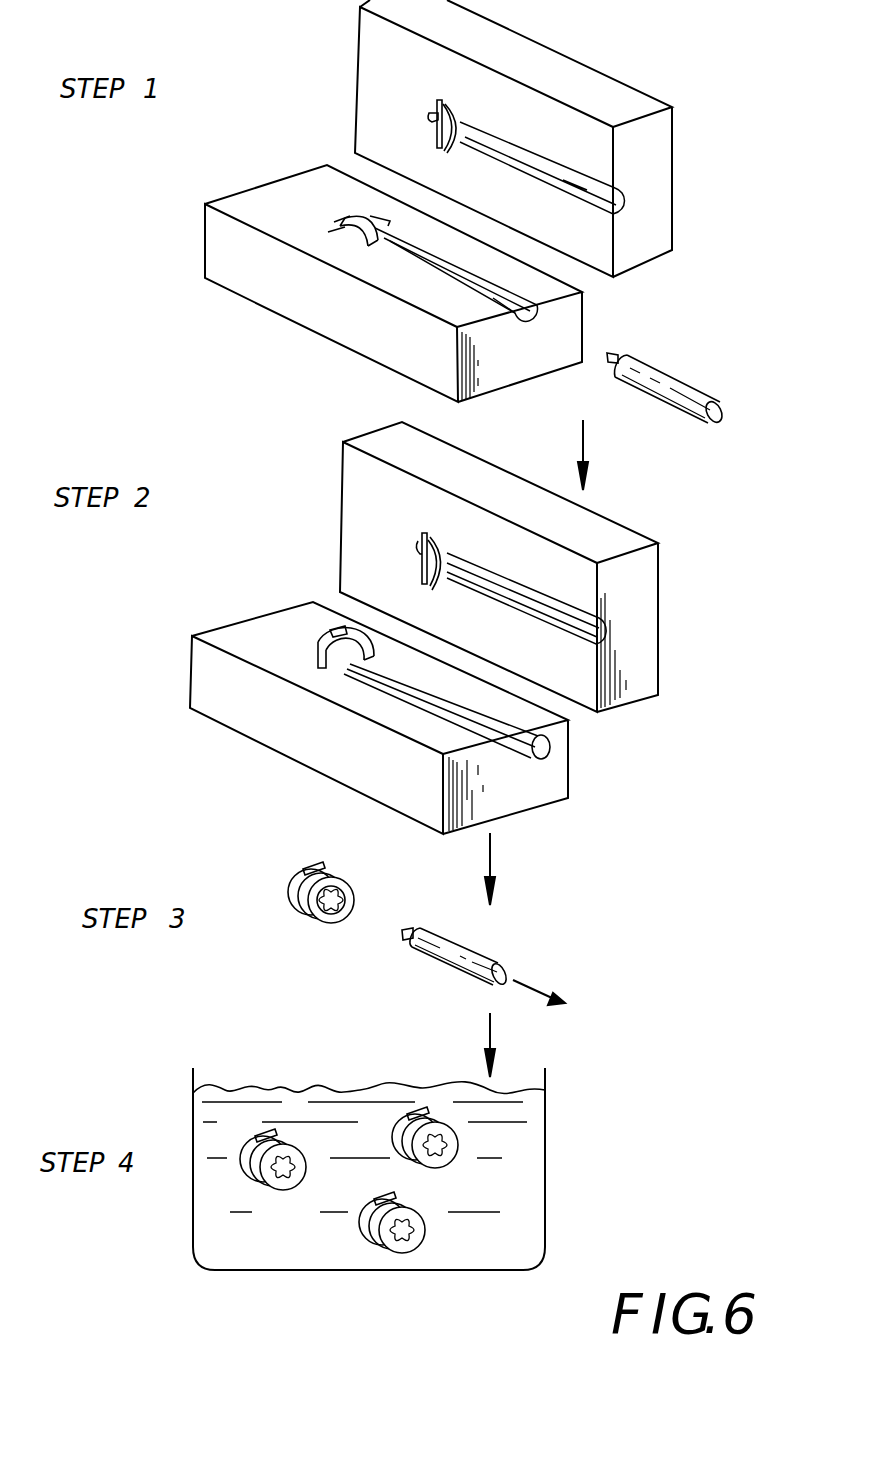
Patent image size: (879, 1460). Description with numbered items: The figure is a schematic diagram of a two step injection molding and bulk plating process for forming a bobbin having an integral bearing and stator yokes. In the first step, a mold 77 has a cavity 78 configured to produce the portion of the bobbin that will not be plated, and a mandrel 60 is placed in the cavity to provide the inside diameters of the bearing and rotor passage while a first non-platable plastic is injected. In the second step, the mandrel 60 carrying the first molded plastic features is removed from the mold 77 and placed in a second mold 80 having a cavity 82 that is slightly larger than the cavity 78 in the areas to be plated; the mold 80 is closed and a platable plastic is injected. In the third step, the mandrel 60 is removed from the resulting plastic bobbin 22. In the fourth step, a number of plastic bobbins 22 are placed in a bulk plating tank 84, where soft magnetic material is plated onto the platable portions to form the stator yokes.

The plastic bobbin 22 is at (317, 647).
The mandrel 60 is at (680, 385).
The mold 77 is at (580, 313).
The cavity 78 is at (437, 132).
The second mold 80 is at (562, 739).
The cavity 82 is at (420, 565).
The bulk plating tank 84 is at (546, 1160).